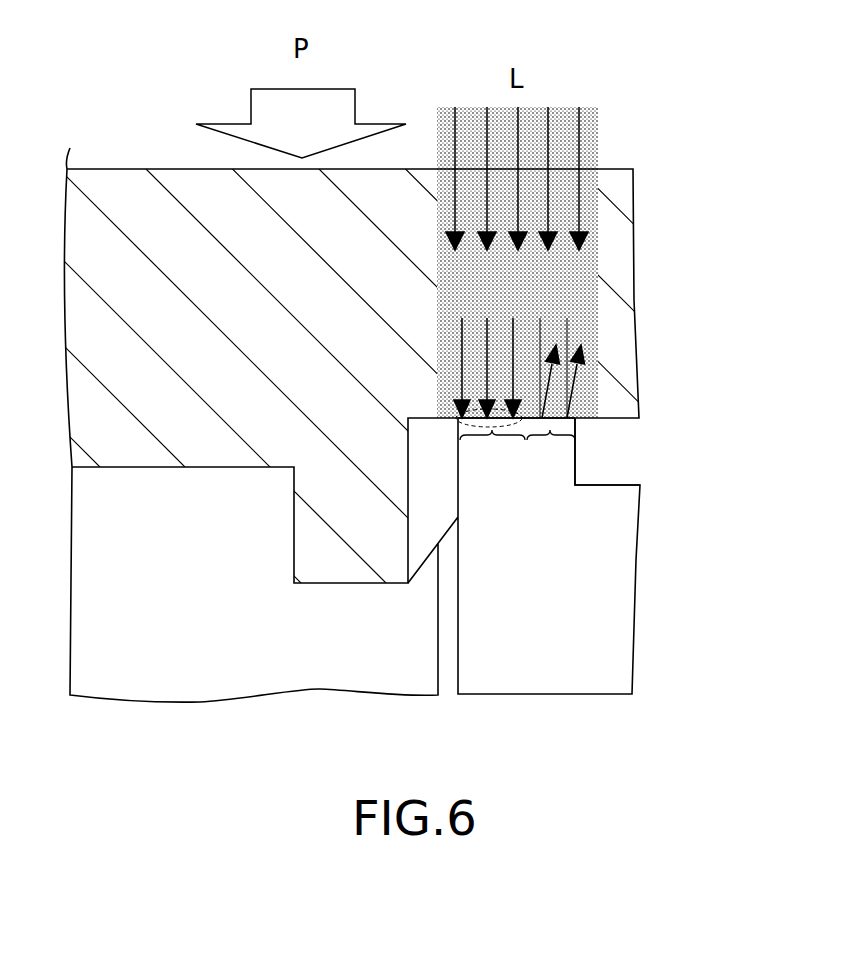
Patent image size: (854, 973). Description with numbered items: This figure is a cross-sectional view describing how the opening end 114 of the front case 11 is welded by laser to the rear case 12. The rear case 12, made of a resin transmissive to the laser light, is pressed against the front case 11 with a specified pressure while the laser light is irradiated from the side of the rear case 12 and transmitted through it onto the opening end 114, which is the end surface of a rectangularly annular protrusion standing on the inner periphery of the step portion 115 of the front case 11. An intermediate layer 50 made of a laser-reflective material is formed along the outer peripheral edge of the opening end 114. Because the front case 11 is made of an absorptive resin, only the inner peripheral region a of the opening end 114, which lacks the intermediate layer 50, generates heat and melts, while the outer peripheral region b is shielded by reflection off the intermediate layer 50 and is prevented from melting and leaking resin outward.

The rear case 12 is at (623, 223).
The front case 11 is at (607, 602).
The step portion 115 is at (620, 480).
The intermediate layer 50 is at (552, 412).
The opening end 114 is at (563, 470).